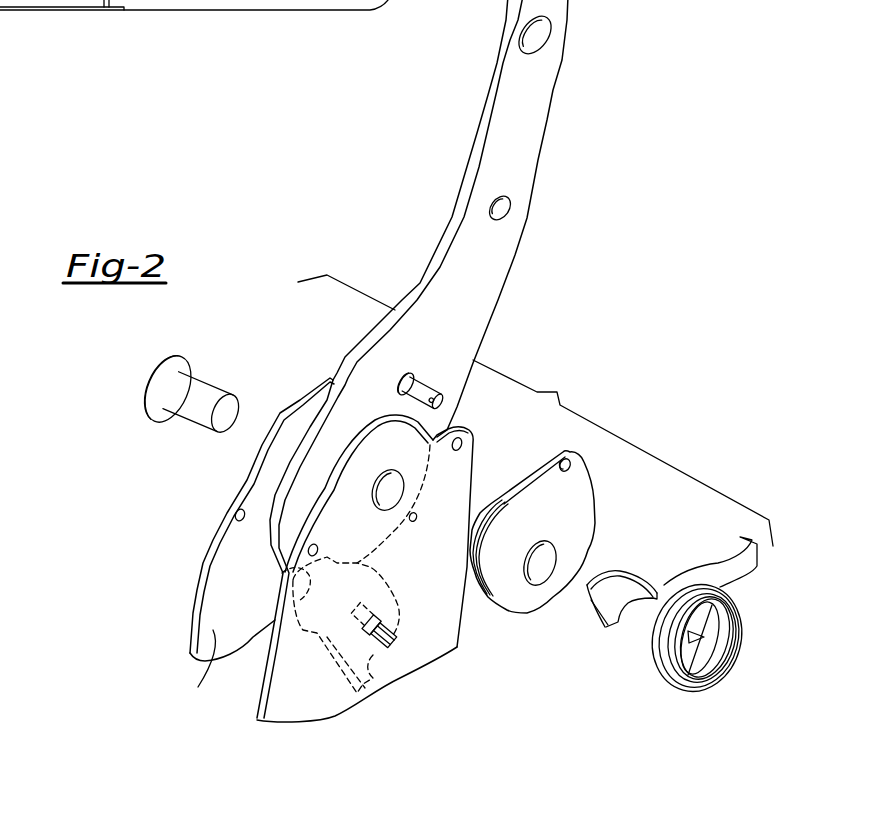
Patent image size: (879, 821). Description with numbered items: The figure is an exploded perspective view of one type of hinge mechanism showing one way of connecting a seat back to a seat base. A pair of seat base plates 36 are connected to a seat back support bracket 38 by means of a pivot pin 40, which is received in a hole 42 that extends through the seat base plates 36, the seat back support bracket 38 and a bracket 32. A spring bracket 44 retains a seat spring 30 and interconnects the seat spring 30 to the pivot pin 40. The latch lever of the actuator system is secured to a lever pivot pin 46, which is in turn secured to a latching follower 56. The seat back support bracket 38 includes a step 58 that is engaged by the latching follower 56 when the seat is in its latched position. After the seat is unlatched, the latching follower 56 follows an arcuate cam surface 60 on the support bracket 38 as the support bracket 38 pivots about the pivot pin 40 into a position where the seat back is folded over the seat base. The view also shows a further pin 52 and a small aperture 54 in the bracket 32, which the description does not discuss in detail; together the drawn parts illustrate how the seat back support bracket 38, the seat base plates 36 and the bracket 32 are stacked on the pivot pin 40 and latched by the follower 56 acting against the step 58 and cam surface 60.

The seat spring 30 is at (655, 646).
The bracket 32 is at (582, 525).
The seat base plates 36 is at (275, 672).
The seat back support bracket 38 is at (490, 270).
The pivot pin 40 is at (208, 390).
The hole 42 is at (388, 491).
The spring bracket 44 is at (607, 593).
The lever pivot pin 46 is at (373, 617).
The pin 52 is at (423, 390).
The aperture 54 is at (572, 466).
The latching follower 56 is at (370, 680).
The step 58 is at (282, 574).
The arcuate cam surface 60 is at (277, 495).